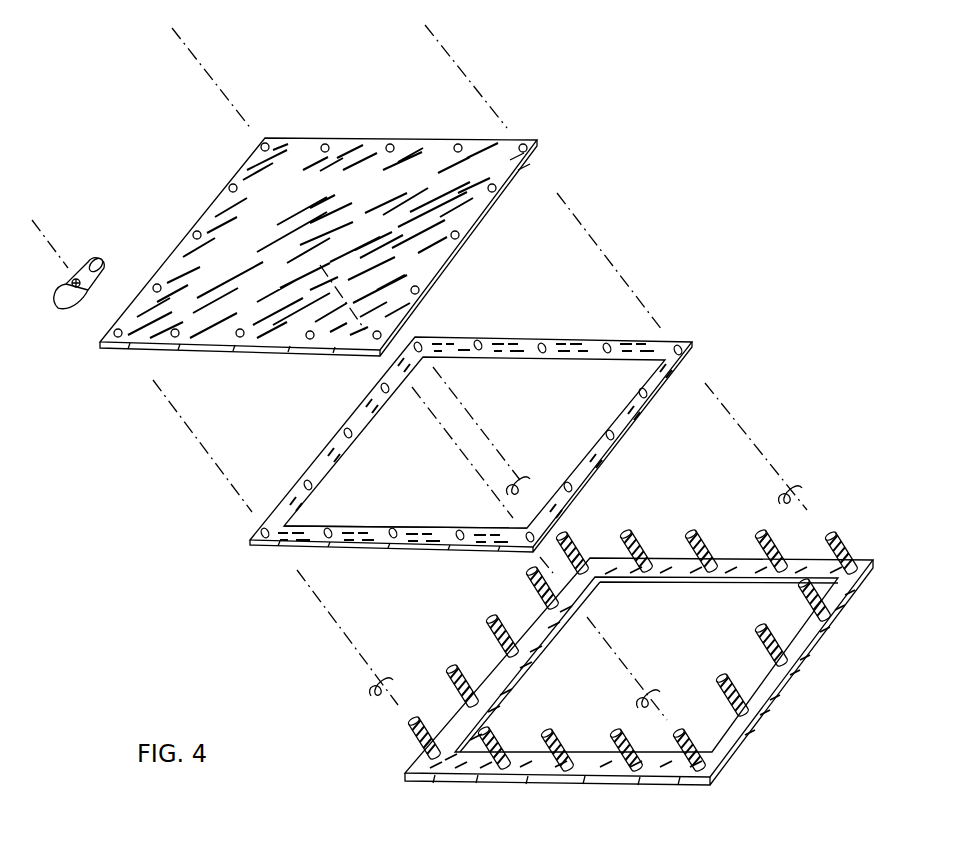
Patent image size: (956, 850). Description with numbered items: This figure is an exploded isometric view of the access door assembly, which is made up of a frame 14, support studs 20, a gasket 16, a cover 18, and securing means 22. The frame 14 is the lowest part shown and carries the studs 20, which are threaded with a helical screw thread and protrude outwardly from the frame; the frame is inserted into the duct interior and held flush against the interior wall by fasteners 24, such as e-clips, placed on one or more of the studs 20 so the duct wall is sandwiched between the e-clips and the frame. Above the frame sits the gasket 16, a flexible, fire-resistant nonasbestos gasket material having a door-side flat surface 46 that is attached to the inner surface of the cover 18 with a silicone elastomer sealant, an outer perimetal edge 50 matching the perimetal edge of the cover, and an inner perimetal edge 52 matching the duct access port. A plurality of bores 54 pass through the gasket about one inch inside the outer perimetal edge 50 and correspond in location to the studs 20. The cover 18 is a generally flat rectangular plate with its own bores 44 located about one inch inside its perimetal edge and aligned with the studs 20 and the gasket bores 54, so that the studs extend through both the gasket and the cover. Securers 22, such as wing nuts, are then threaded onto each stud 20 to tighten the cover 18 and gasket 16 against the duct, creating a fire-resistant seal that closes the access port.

The frame 14 is at (743, 748).
The gasket 16 is at (508, 438).
The cover 18 is at (297, 135).
The support studs 20 is at (480, 633).
The securing means 22 is at (88, 248).
The fasteners 24 is at (775, 498).
The bores 44 is at (528, 135).
The door-side flat surface 46 is at (653, 343).
The outer perimetal edge 50 is at (353, 550).
The inner perimetal edge 52 is at (365, 523).
The bores 54 is at (790, 370).